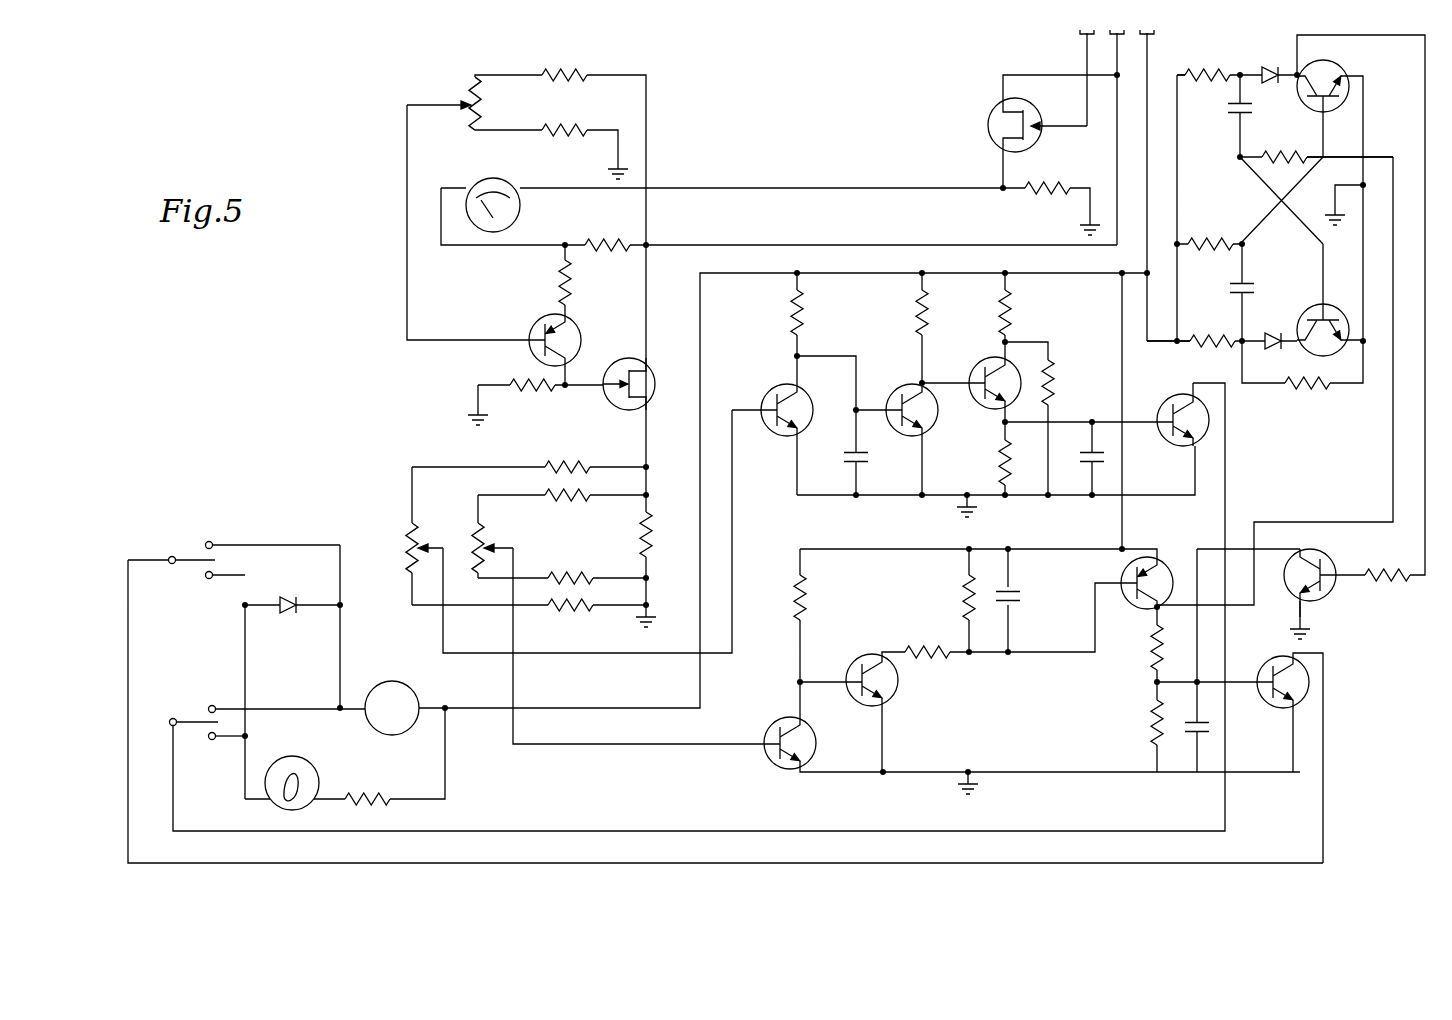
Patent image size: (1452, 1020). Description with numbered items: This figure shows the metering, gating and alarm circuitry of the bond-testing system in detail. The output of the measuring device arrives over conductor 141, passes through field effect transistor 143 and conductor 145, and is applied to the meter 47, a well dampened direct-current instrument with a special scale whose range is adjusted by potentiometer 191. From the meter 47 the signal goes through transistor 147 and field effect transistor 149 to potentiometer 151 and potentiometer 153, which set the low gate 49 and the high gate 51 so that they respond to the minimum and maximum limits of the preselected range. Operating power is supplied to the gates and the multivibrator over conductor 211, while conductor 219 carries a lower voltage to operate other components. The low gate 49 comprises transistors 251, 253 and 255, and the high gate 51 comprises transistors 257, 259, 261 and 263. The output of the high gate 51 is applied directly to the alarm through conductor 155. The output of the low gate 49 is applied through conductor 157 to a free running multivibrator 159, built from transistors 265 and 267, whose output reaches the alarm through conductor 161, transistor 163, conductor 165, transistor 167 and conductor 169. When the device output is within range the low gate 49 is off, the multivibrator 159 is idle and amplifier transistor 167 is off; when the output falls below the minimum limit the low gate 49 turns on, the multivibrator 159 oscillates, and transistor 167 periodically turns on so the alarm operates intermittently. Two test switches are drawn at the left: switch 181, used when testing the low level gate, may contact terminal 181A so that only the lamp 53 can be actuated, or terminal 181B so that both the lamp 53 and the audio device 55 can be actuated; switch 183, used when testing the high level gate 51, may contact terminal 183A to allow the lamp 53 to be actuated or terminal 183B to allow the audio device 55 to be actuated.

The meter 47 is at (493, 179).
The low gate 49 is at (868, 773).
The high gate 51 is at (950, 498).
The lamp 53 is at (318, 780).
The audio device 55 is at (392, 681).
The conductor 141 is at (1085, 40).
The field effect transistor 143 is at (988, 128).
The conductor 145 is at (800, 188).
The transistor 147 is at (542, 322).
The field effect transistor 149 is at (614, 362).
The potentiometer 151 is at (474, 543).
The potentiometer 153 is at (410, 502).
The conductor 155 is at (1227, 458).
The conductor 157 is at (1340, 522).
The free running multivibrator 159 is at (1368, 158).
The conductor 161 is at (1296, 44).
The transistor 163 is at (1330, 592).
The conductor 165 is at (1262, 548).
The transistor 167 is at (1267, 658).
The conductor 169 is at (1325, 800).
The switch 181 is at (174, 564).
The terminal 181A is at (211, 580).
The terminal 181B is at (213, 548).
The switch 183 is at (176, 726).
The terminal 183A is at (214, 740).
The terminal 183B is at (215, 709).
The potentiometer 191 is at (463, 90).
The conductor 211 is at (1152, 55).
The conductor 219 is at (1115, 62).
The transistor 251 is at (777, 718).
The transistor 253 is at (899, 690).
The transistor 255 is at (1122, 585).
The transistor 257 is at (786, 385).
The transistor 259 is at (899, 392).
The transistor 261 is at (988, 360).
The transistor 263 is at (1193, 395).
The transistor 265 is at (1300, 320).
The transistor 267 is at (1308, 72).